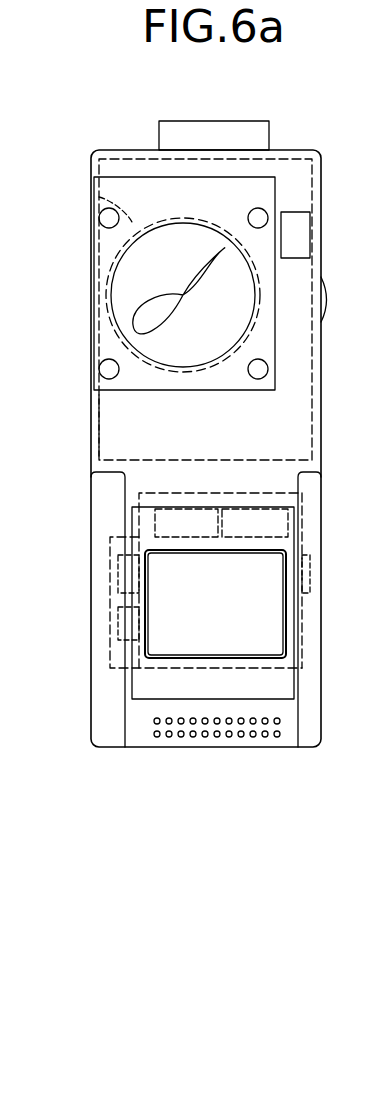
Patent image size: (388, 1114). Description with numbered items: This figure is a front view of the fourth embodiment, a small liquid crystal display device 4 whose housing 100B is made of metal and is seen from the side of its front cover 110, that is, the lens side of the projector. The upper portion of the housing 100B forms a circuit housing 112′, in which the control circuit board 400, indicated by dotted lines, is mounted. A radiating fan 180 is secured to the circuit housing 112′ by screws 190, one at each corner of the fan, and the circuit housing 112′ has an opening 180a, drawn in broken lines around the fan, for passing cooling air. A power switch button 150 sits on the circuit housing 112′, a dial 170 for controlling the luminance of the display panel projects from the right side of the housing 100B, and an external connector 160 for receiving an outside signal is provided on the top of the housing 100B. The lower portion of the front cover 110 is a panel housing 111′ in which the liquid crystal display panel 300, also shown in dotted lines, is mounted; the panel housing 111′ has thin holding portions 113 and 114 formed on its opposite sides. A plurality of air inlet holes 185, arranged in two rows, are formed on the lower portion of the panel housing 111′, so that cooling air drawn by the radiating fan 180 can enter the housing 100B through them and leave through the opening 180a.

The housing 100B is at (86, 158).
The external connector 160 is at (270, 124).
The radiating fan 180 is at (137, 176).
The opening 180a is at (93, 198).
The screws 190 is at (265, 211).
The power switch button 150 is at (303, 212).
The dial 170 is at (328, 297).
The liquid crystal display device 4 is at (84, 299).
The control circuit board 400 is at (98, 436).
The circuit housing 112′ is at (118, 401).
The front cover 110 is at (100, 466).
The liquid crystal display panel 300 is at (305, 500).
The holding portion 113 is at (106, 672).
The holding portion 114 is at (312, 682).
The panel housing 111′ is at (137, 718).
The air inlet holes 185 is at (283, 738).